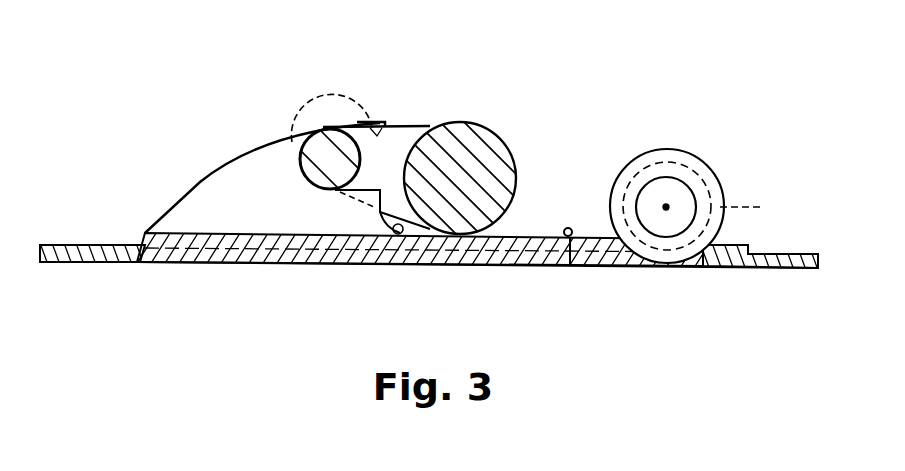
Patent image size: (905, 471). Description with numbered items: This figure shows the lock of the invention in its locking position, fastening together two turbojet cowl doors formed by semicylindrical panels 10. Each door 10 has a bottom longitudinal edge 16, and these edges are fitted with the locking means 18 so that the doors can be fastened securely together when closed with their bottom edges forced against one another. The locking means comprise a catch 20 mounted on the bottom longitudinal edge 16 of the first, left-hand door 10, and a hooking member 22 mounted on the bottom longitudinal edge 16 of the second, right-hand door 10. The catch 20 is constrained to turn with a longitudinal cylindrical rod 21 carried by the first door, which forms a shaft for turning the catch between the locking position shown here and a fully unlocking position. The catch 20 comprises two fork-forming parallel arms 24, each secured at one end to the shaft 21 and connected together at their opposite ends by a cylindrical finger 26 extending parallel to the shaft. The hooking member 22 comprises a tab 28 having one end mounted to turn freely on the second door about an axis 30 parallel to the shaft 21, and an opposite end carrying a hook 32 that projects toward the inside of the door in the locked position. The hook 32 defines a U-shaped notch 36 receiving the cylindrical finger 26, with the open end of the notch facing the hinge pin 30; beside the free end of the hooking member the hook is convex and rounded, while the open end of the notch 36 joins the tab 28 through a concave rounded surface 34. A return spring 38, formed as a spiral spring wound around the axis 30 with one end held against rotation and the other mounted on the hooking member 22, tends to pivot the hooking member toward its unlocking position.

The panel 10 is at (90, 244).
The bottom longitudinal edge 16 is at (551, 266).
The locking means 18 is at (198, 162).
The catch 20 is at (460, 170).
The longitudinal cylindrical rod 21 is at (478, 157).
The hooking member 22 is at (502, 268).
The fork-forming parallel arm 24 is at (411, 124).
The cylindrical finger 26 is at (320, 165).
The tab 28 is at (338, 264).
The axis 30 is at (666, 207).
The hook 32 is at (180, 195).
The concave rounded surface 34 is at (397, 268).
The U-shaped notch 36 is at (372, 128).
The return spring 38 is at (567, 228).